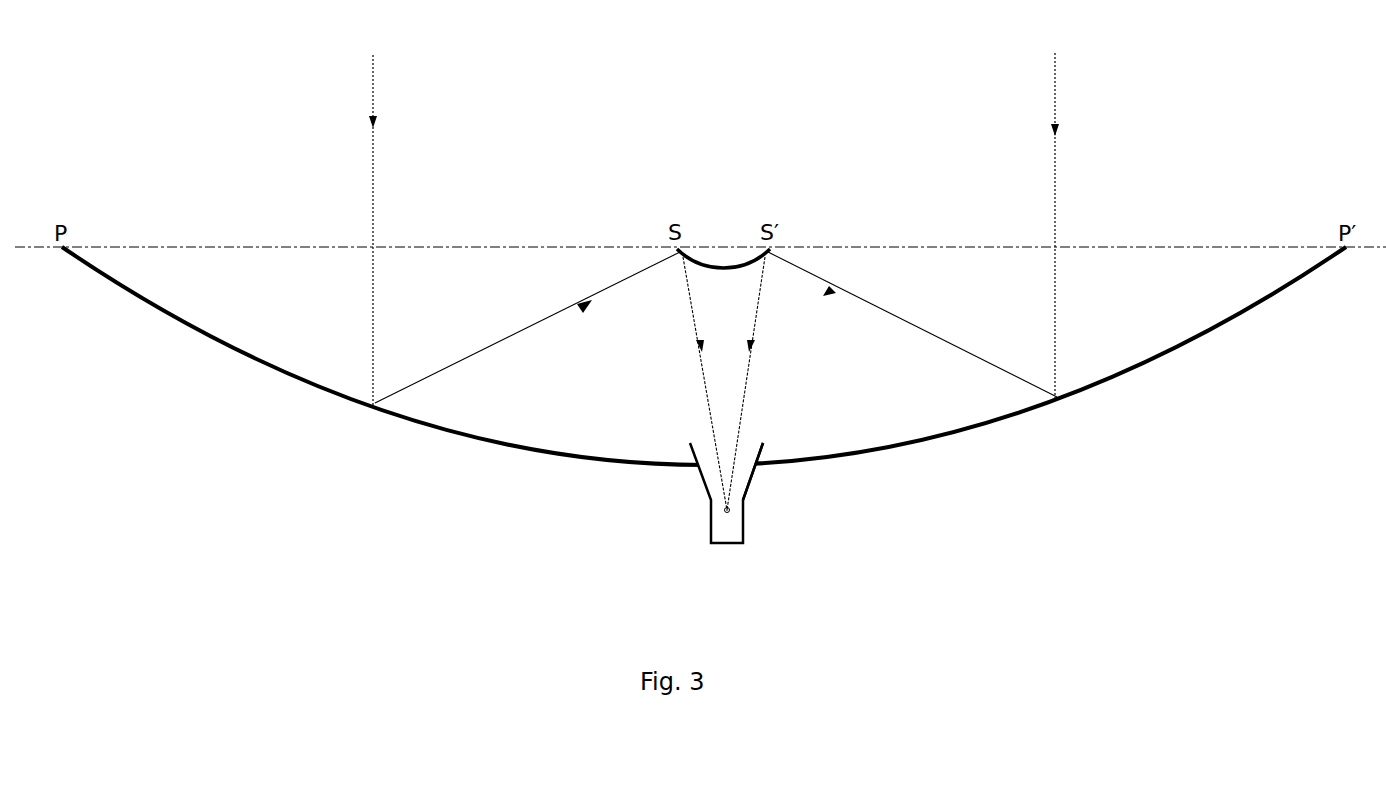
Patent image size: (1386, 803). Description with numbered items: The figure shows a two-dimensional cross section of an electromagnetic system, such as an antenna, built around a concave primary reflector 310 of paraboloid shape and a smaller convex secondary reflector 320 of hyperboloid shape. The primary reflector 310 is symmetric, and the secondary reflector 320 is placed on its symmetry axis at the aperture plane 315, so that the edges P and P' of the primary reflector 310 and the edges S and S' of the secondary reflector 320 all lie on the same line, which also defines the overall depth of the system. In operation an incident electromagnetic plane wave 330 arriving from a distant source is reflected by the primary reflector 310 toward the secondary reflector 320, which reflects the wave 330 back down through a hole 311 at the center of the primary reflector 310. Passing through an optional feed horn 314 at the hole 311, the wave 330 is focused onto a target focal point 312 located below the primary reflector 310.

The primary reflector 310 is at (152, 310).
The hole 311 is at (710, 463).
The target focal point 312 is at (733, 508).
The feed horn 314 is at (750, 482).
The aperture plane 315 is at (150, 245).
The secondary reflector 320 is at (683, 250).
The electromagnetic plane wave 330 is at (373, 157).